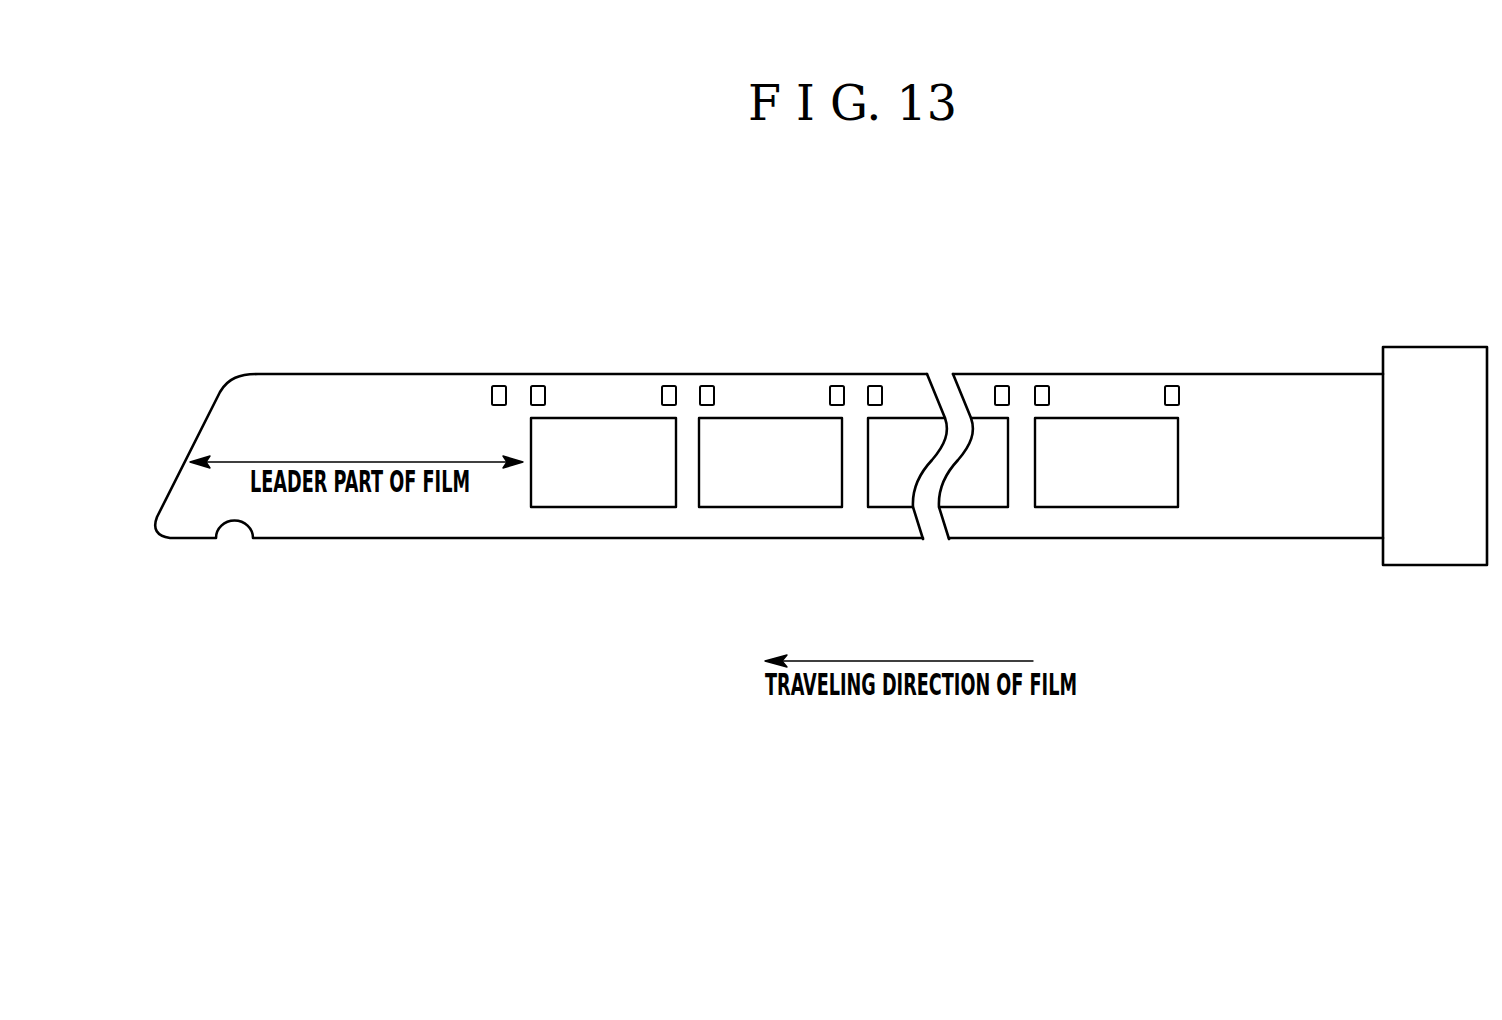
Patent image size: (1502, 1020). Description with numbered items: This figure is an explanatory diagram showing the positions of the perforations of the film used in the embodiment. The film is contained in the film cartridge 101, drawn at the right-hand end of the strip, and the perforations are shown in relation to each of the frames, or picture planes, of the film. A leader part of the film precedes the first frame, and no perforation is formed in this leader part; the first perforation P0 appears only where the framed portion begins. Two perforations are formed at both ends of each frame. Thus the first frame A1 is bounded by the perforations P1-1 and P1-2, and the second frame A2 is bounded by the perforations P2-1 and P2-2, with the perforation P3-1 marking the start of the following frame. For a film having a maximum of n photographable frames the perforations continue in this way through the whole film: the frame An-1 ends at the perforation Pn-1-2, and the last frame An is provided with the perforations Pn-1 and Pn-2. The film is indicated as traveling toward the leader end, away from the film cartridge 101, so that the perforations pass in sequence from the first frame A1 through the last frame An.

The film cartridge 101 is at (1440, 565).
The first frame A1 is at (600, 507).
The second frame A2 is at (772, 507).
The (n-1)th frame An-1 is at (983, 507).
The last frame An is at (1112, 507).
The perforation P0 is at (499, 386).
The perforation P1-1 is at (538, 386).
The perforation P1-2 is at (669, 386).
The perforation P2-1 is at (707, 386).
The perforation P2-2 is at (837, 386).
The perforation P3-1 is at (876, 386).
The perforation Pn-1-2 is at (1002, 386).
The perforation Pn-1 is at (1042, 386).
The perforation Pn-2 is at (1172, 386).